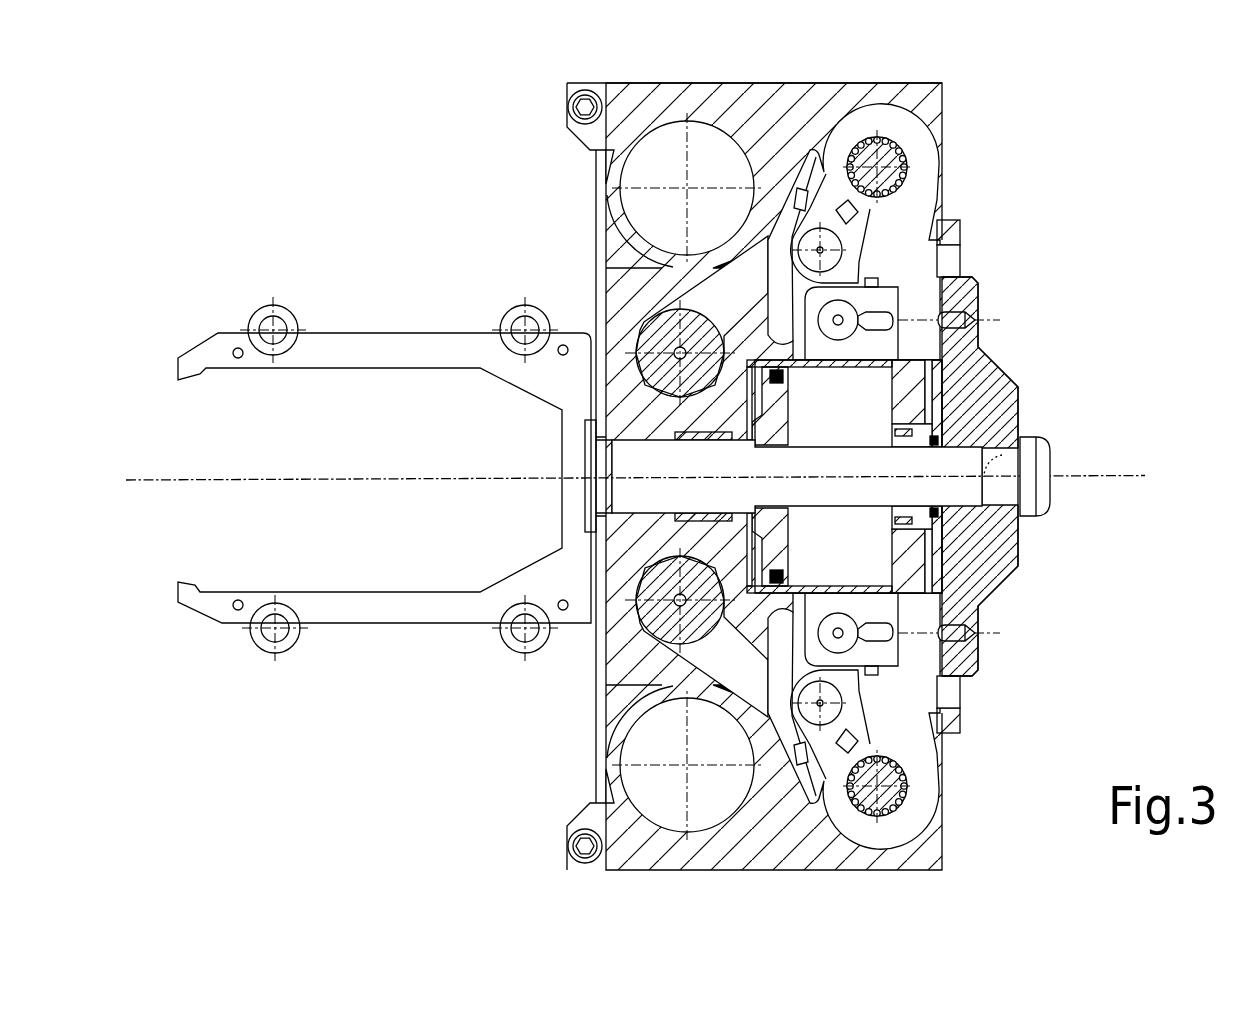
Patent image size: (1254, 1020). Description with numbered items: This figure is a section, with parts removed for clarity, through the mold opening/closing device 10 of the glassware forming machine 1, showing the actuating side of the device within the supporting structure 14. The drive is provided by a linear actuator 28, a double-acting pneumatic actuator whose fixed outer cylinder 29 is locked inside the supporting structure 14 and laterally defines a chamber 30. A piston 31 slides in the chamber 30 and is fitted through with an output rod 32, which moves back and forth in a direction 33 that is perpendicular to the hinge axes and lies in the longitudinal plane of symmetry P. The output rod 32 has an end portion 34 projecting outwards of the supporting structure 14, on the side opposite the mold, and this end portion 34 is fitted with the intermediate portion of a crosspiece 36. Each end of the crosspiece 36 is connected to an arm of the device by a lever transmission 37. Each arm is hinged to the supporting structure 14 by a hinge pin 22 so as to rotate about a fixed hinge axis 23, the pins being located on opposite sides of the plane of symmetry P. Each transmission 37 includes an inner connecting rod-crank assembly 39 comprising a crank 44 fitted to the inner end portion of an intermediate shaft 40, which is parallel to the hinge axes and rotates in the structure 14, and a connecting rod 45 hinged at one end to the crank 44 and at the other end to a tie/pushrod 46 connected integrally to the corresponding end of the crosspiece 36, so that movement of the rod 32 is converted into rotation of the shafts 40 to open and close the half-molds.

The machine for forming glassware items 1 is at (982, 100).
The mold opening/closing device 10 is at (1003, 653).
The supporting structure 14 is at (722, 845).
The hinge pin 22 is at (655, 322).
The fixed hinge axis 23 is at (660, 350).
The linear actuator 28 is at (1030, 373).
The fixed outer cylinder 29 is at (858, 582).
The chamber 30 is at (852, 371).
The piston 31 is at (765, 402).
The output rod 32 is at (966, 514).
The direction 33 is at (990, 477).
The end portion 34 is at (1003, 478).
The crosspiece 36 is at (1002, 598).
The lever transmission 37 is at (905, 281).
The connecting rod-crank assembly 39 is at (884, 240).
The intermediate shaft 40 is at (880, 160).
The crank 44 is at (870, 211).
The connecting rod 45 is at (848, 263).
The tie/pushrod 46 is at (867, 305).
The longitudinal plane of symmetry P is at (894, 466).